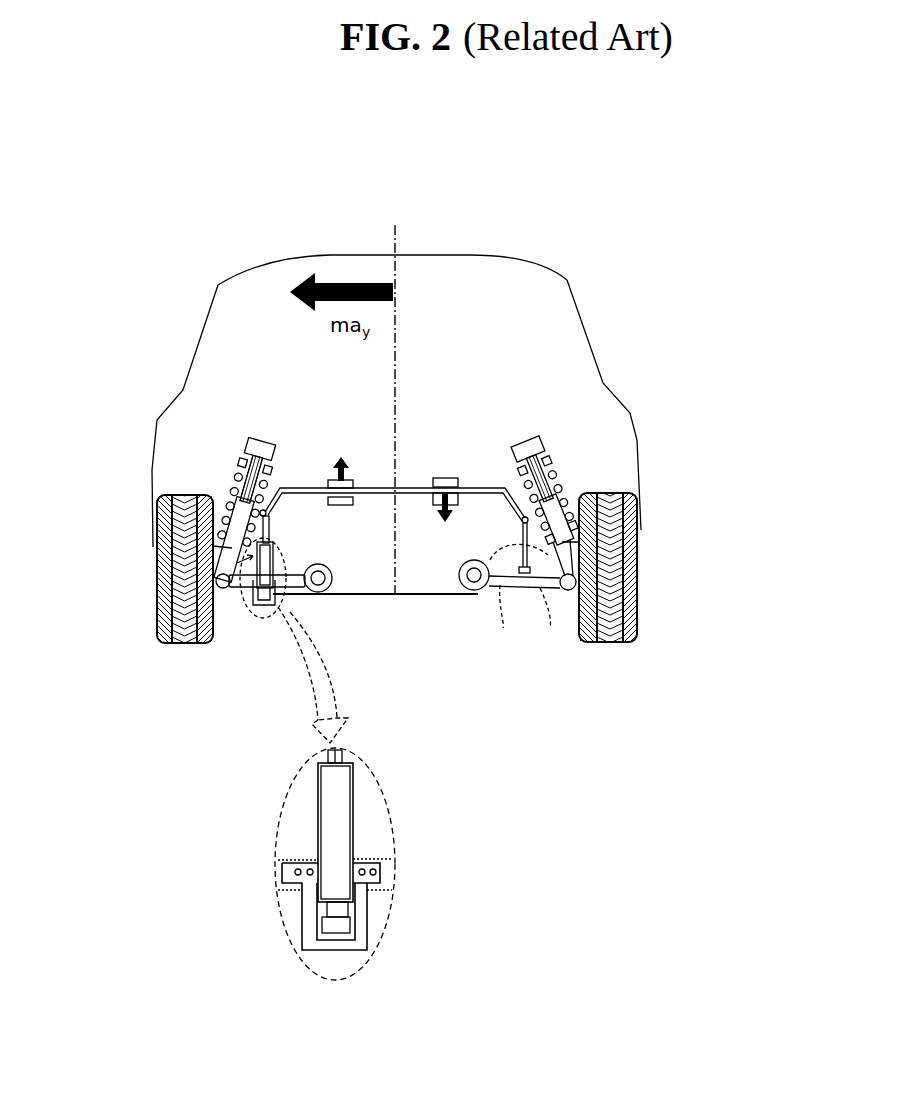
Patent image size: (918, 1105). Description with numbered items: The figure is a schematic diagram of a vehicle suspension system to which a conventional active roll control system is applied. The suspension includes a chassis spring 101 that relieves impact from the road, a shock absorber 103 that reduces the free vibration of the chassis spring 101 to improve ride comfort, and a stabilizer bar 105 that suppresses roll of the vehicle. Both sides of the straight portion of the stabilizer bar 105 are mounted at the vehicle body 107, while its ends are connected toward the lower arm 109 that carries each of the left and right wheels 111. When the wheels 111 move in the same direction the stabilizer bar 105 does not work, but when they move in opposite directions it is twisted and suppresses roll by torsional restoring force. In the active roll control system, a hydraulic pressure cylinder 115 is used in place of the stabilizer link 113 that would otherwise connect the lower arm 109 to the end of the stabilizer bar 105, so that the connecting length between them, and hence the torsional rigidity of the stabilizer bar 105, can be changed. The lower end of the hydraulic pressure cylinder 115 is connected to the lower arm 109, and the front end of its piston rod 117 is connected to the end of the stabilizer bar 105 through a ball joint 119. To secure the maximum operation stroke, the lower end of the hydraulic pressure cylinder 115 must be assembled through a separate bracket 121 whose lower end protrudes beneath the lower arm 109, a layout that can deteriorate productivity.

The chassis spring 101 is at (228, 476).
The shock absorber 103 is at (176, 497).
The stabilizer bar 105 is at (447, 527).
The vehicle body 107 is at (585, 327).
The lower arm 109 is at (240, 605).
The wheel 111 is at (158, 610).
The stabilizer link 113 is at (523, 548).
The hydraulic pressure cylinder 115 is at (158, 556).
The piston rod 117 is at (160, 524).
The ball joint 119 is at (280, 515).
The bracket 121 is at (362, 930).